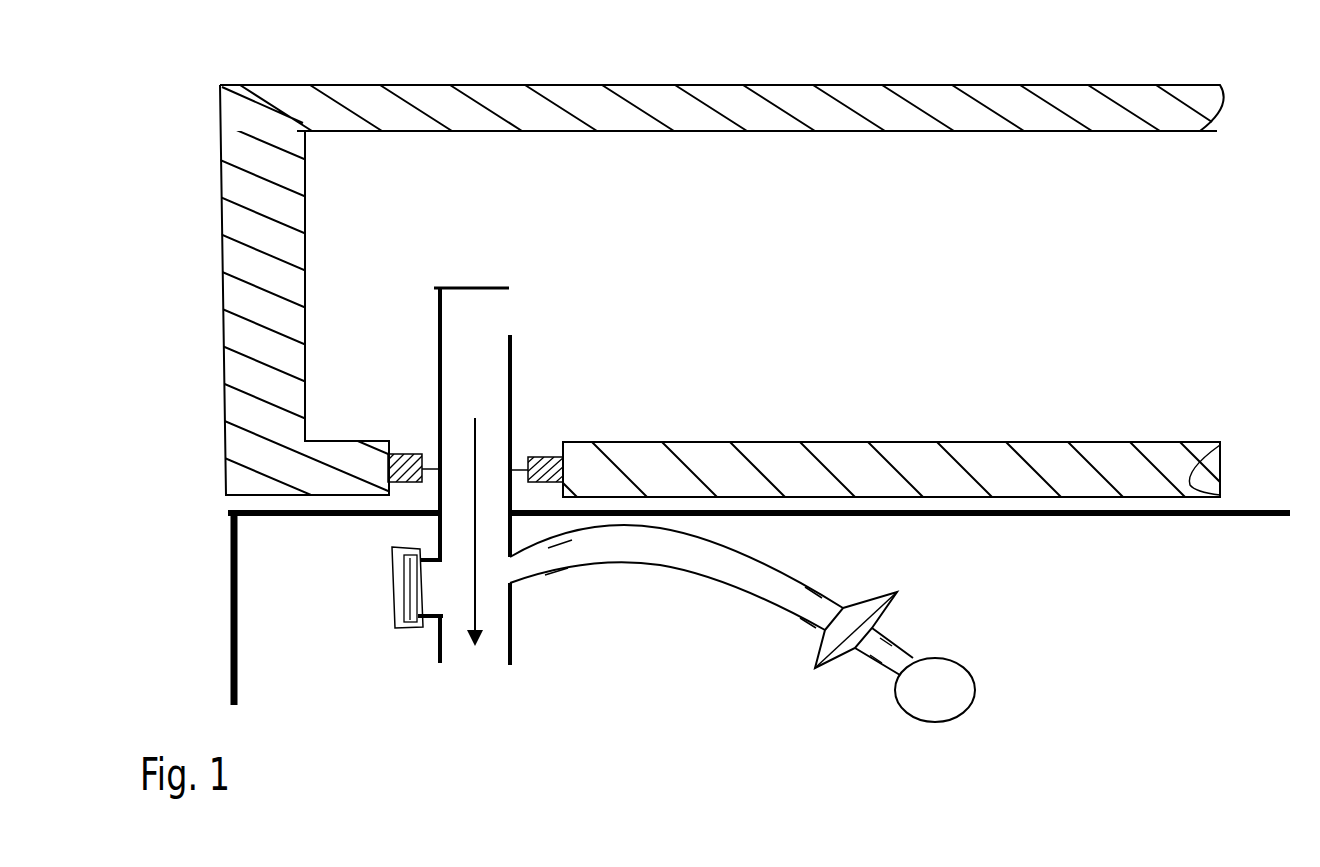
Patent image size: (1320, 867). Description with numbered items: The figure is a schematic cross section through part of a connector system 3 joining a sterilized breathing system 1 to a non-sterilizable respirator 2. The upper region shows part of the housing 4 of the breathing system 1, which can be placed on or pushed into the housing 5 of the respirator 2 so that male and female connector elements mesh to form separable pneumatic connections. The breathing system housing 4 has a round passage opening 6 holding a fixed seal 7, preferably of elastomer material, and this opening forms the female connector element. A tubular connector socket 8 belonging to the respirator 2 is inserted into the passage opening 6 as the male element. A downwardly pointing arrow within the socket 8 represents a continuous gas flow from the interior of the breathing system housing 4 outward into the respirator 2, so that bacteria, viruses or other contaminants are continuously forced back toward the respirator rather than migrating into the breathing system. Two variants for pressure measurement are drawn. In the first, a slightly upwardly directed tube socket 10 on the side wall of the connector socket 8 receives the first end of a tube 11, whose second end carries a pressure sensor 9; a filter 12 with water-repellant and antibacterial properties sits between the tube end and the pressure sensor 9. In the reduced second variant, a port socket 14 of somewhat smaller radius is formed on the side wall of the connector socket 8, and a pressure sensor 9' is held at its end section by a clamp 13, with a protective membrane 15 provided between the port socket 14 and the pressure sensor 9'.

The breathing system 1 is at (1157, 293).
The respirator 2 is at (759, 551).
The connector system 3 is at (588, 348).
The housing of the breathing system 4 is at (673, 135).
The housing of the respirator 5 is at (238, 562).
The passage opening 6 is at (518, 468).
The seal 7 is at (402, 452).
The connector socket 8 is at (466, 286).
The pressure sensor 9 is at (964, 711).
The pressure sensor 9' is at (400, 665).
The tube socket 10 is at (522, 582).
The tube 11 is at (650, 565).
The filter 12 is at (815, 675).
The clamp 13 is at (390, 563).
The port socket 14 is at (432, 622).
The membrane 15 is at (420, 600).